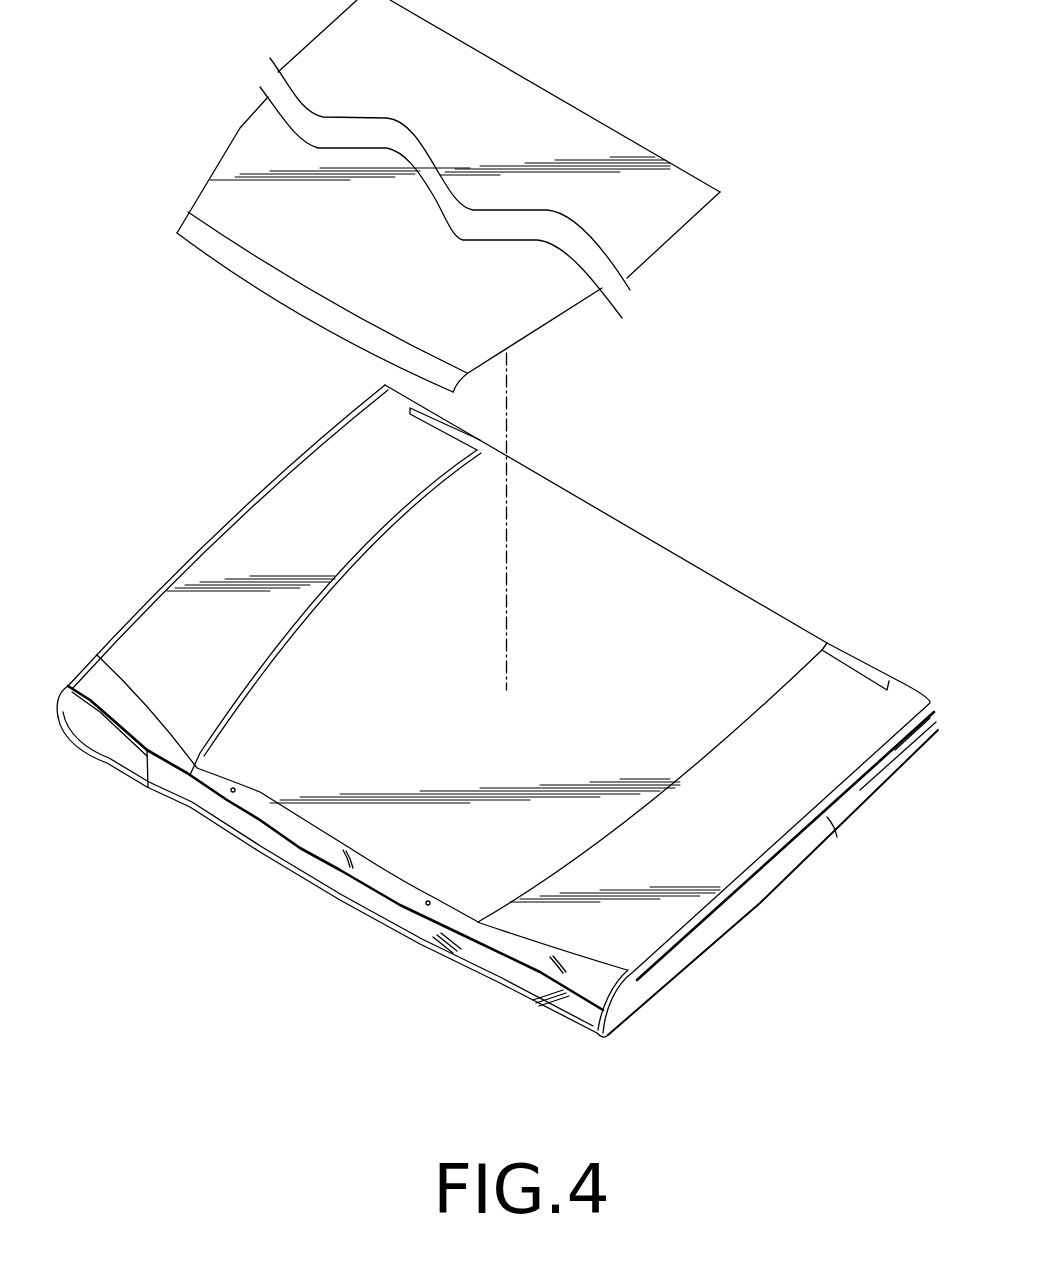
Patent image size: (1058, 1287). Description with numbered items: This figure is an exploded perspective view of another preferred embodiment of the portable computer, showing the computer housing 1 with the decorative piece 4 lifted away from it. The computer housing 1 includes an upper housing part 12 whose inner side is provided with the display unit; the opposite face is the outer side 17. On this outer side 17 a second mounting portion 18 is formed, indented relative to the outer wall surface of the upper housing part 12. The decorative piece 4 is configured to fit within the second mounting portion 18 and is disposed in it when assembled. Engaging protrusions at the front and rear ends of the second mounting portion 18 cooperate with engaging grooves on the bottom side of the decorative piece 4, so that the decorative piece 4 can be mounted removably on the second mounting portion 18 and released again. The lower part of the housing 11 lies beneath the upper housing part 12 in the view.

The computer housing 1 is at (497, 711).
The decorative piece 4 is at (635, 245).
The base housing 11 is at (787, 870).
The upper housing part 12 is at (501, 709).
The outer side 17 is at (818, 700).
The second mounting portion 18 is at (727, 605).